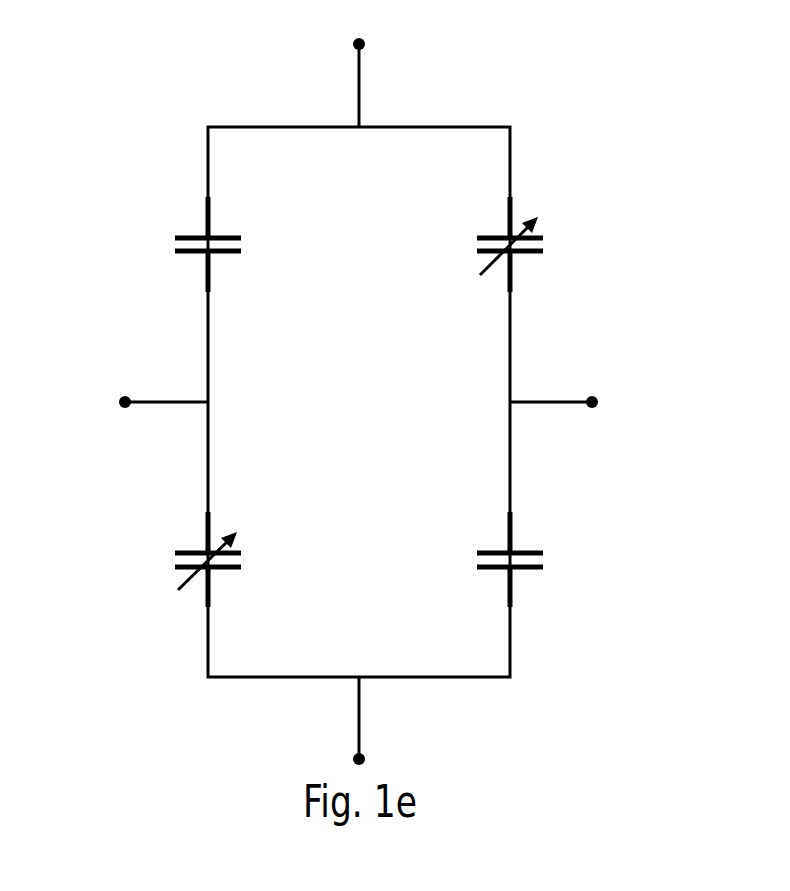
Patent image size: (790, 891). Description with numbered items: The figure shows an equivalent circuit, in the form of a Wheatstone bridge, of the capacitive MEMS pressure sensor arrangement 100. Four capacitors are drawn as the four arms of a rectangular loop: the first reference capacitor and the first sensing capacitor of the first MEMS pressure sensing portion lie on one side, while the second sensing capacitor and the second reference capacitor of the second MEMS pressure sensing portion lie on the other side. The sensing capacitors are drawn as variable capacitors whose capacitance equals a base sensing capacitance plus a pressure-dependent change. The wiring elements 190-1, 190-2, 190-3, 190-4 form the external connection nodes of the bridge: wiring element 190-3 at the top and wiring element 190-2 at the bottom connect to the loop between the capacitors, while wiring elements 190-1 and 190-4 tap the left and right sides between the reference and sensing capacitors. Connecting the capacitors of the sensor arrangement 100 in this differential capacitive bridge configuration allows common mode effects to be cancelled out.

The capacitive MEMS pressure sensor arrangement 100 is at (107, 54).
The wiring element 190-1 is at (167, 402).
The wiring element 190-2 is at (455, 677).
The wiring element 190-3 is at (452, 127).
The wiring element 190-4 is at (553, 402).